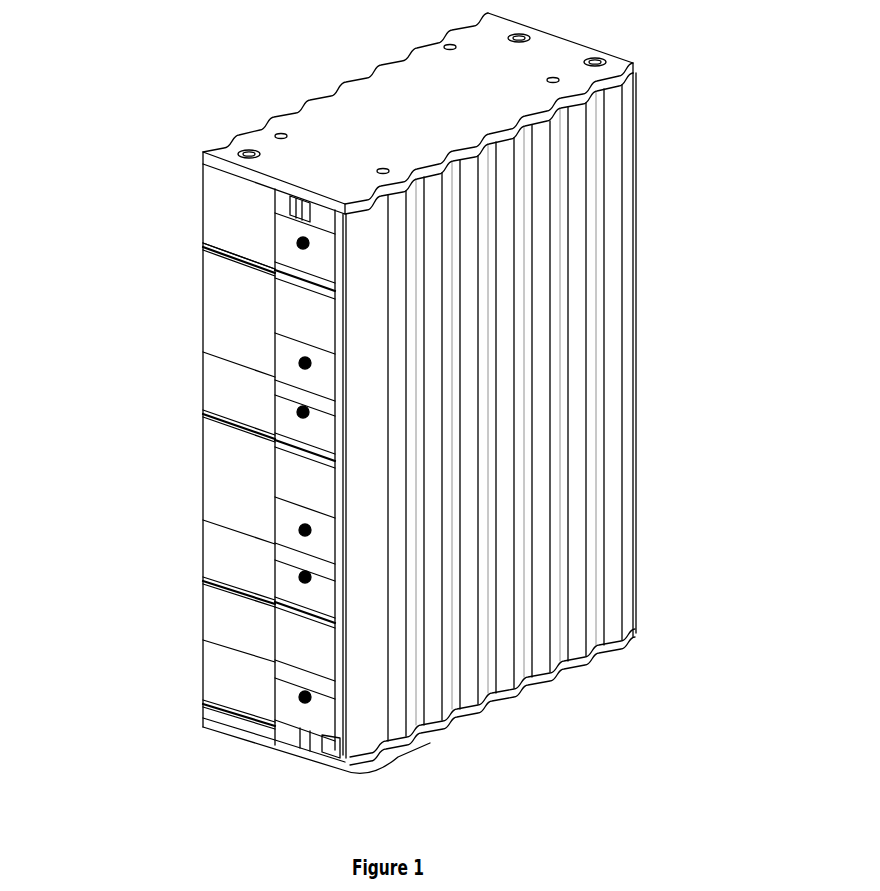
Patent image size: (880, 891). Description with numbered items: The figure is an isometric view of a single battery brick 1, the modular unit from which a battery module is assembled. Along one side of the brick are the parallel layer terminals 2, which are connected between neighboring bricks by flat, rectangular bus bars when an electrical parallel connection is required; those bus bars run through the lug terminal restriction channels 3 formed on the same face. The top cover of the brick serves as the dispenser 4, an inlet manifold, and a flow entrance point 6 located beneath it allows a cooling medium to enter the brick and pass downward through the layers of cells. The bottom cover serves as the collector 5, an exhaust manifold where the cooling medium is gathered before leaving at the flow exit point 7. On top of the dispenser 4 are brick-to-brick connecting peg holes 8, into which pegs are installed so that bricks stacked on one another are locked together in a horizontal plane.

The battery brick 1 is at (597, 333).
The parallel layer terminal 2 is at (295, 697).
The lug terminal restriction channel 3 is at (247, 558).
The dispenser 4 is at (342, 112).
The collector 5 is at (277, 745).
The flow entrance point 6 is at (310, 207).
The flow exit point 7 is at (312, 742).
The brick-to-brick connecting peg hole 8 is at (450, 47).